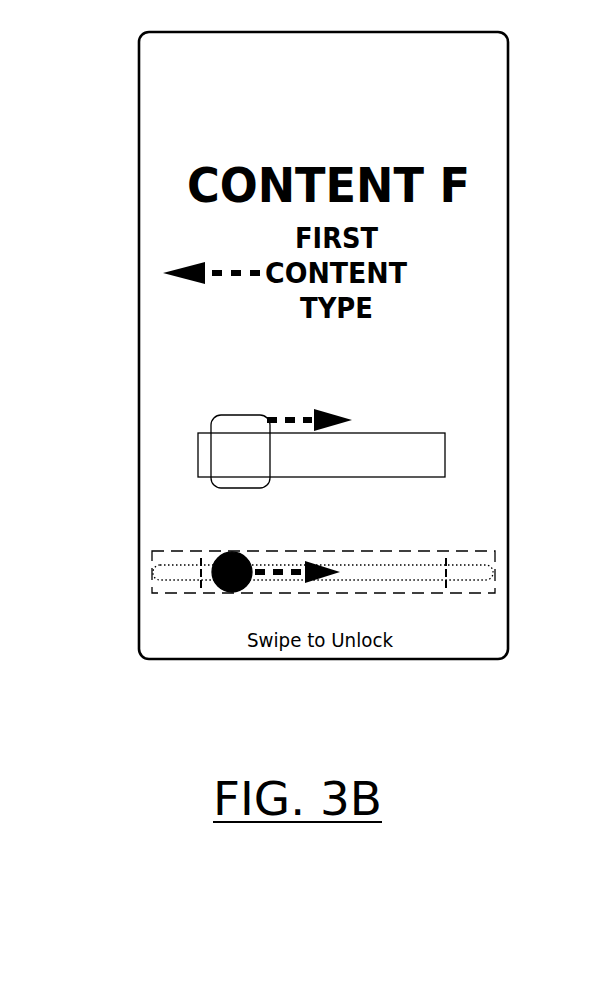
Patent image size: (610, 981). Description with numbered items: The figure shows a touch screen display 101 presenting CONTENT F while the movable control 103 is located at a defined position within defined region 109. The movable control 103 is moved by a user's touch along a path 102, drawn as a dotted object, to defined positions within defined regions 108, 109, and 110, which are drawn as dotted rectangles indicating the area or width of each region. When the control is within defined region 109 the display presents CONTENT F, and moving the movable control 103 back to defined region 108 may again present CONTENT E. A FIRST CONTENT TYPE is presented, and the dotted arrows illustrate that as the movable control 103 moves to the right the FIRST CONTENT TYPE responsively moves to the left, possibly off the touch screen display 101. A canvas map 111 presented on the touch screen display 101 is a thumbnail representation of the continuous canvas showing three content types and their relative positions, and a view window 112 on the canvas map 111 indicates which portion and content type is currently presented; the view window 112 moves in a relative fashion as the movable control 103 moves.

The touch screen display 101 is at (357, 345).
The path 102 is at (330, 625).
The movable control 103 is at (177, 623).
The defined region 108 is at (219, 545).
The defined region 109 is at (332, 543).
The defined region 110 is at (509, 545).
The canvas map 111 is at (385, 427).
The view window 112 is at (281, 429).